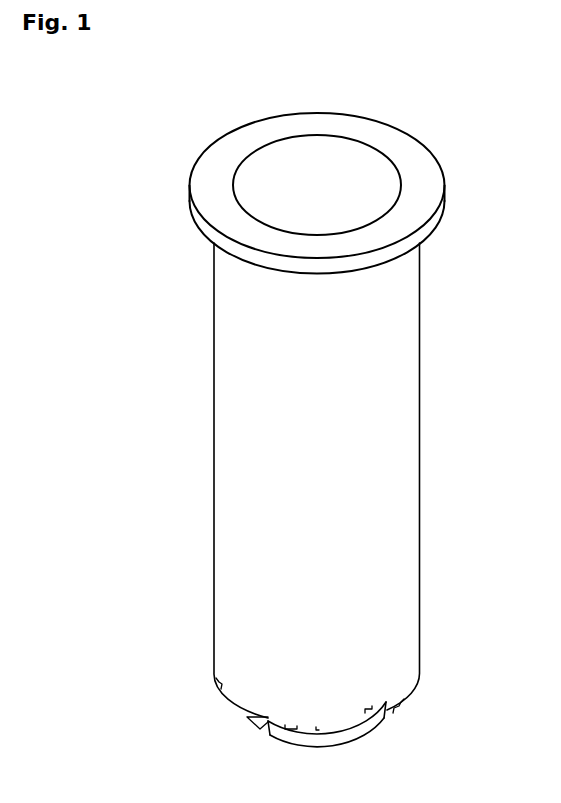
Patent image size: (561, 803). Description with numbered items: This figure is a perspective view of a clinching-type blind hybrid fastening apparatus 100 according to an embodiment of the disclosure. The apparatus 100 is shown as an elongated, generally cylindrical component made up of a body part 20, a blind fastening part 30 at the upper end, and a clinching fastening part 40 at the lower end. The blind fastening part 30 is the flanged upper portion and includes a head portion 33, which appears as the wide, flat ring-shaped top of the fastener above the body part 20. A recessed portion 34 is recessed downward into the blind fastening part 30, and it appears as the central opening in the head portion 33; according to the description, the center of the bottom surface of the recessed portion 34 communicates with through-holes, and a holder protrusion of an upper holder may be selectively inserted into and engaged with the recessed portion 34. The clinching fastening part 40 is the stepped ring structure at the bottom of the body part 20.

The clinching-type blind hybrid fastening apparatus 100 is at (152, 100).
The body part 20 is at (427, 391).
The blind fastening part 30 is at (368, 167).
The head portion 33 is at (425, 181).
The recessed portion 34 is at (372, 177).
The clinching fastening part 40 is at (387, 734).